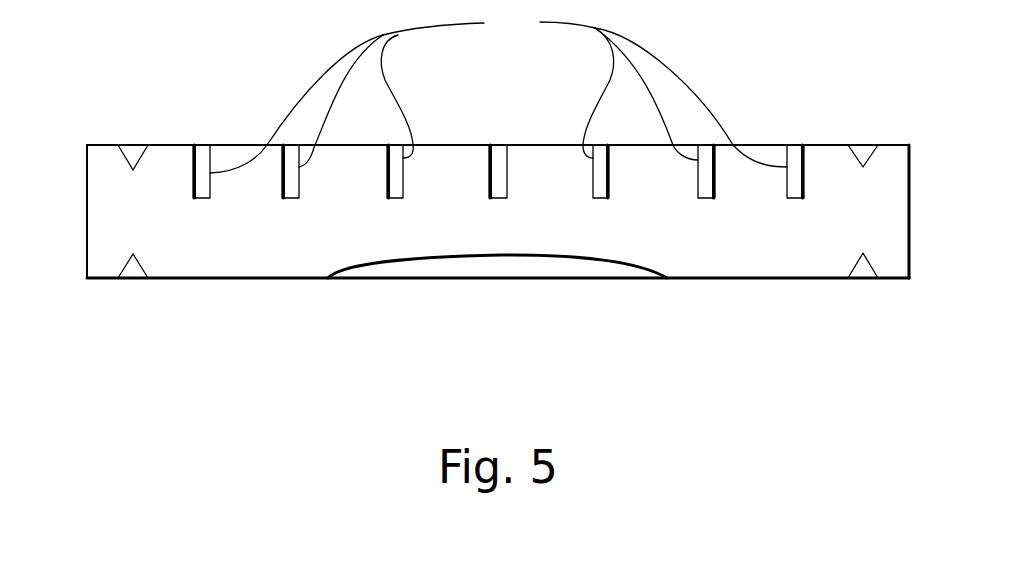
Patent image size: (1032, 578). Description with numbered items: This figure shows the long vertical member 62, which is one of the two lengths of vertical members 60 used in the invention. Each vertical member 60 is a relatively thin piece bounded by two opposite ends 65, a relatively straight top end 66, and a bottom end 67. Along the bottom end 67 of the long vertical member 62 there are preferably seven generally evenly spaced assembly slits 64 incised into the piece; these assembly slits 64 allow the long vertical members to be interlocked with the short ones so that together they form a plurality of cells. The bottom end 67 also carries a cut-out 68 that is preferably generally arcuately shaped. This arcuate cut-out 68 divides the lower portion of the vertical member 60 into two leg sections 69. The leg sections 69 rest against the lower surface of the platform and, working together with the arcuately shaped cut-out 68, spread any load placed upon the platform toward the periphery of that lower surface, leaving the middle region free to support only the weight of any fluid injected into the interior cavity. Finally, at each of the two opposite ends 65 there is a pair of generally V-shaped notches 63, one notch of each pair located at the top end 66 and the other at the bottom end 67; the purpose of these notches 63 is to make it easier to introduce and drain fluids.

The vertical member 60 is at (236, 347).
The long vertical member 62 is at (693, 242).
The notches 63 is at (130, 145).
The assembly slits 64 is at (498, 104).
The opposite ends 65 is at (87, 185).
The top end 66 is at (169, 145).
The bottom end 67 is at (102, 273).
The cut-out 68 is at (500, 273).
The leg sections 69 is at (238, 273).